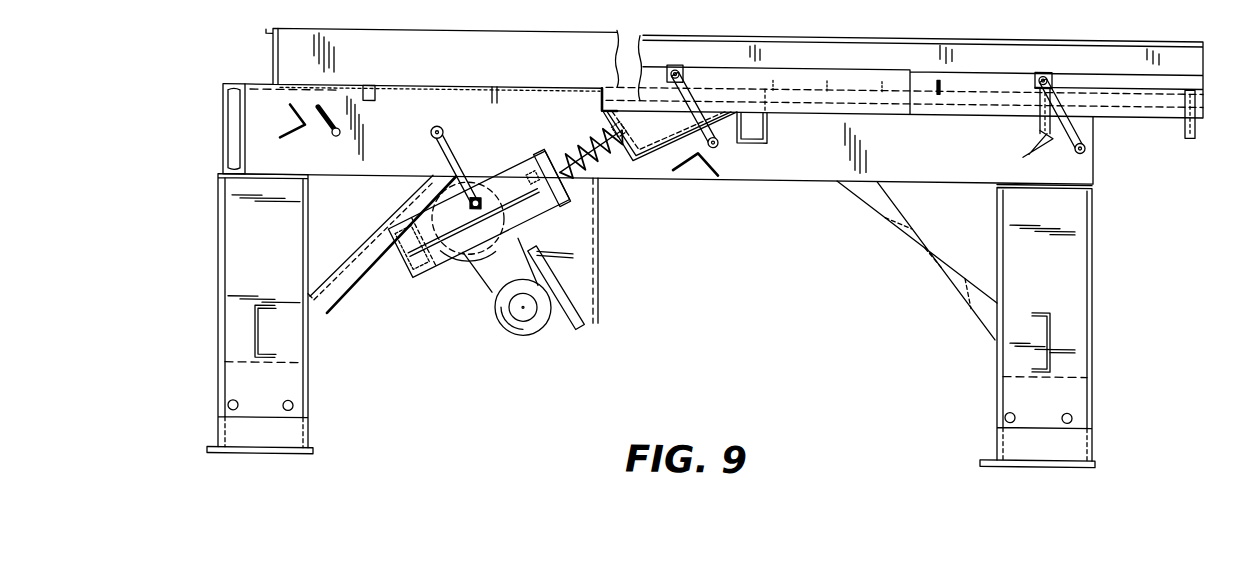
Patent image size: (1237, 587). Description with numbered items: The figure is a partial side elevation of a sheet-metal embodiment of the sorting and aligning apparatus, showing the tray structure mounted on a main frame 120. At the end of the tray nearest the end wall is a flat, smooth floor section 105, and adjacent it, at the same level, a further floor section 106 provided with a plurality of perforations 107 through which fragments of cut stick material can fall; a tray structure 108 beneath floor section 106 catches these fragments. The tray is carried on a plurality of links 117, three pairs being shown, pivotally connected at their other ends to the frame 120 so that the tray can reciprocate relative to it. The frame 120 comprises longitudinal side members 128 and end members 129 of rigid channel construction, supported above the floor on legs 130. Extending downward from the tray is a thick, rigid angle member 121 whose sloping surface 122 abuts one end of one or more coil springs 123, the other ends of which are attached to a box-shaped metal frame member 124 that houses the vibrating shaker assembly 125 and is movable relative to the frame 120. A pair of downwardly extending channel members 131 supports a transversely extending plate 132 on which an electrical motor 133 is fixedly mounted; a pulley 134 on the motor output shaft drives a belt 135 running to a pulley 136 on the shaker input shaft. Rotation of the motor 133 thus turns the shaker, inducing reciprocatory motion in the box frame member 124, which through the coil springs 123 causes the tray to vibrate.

The floor section 105 is at (415, 75).
The floor section 106 is at (617, 48).
The perforations 107 is at (637, 37).
The tray structure 108 is at (604, 85).
The links 117 is at (1068, 84).
The main frame 120 is at (200, 180).
The angle member 121 is at (692, 130).
The sloping surface 122 is at (605, 120).
The coil springs 123 is at (615, 118).
The box-shaped metal frame member 124 is at (523, 156).
The vibrating shaker assembly 125 is at (385, 210).
The longitudinal side members 128 is at (773, 174).
The end members 129 is at (245, 117).
The legs 130 is at (218, 309).
The channel members 131 is at (599, 240).
The plate 132 is at (590, 283).
The electrical motor 133 is at (540, 326).
The pulley 134 is at (482, 289).
The belt 135 is at (470, 282).
The pulley 136 is at (413, 182).